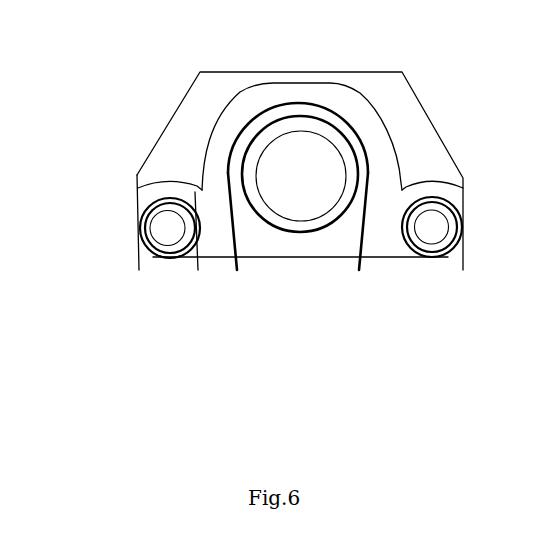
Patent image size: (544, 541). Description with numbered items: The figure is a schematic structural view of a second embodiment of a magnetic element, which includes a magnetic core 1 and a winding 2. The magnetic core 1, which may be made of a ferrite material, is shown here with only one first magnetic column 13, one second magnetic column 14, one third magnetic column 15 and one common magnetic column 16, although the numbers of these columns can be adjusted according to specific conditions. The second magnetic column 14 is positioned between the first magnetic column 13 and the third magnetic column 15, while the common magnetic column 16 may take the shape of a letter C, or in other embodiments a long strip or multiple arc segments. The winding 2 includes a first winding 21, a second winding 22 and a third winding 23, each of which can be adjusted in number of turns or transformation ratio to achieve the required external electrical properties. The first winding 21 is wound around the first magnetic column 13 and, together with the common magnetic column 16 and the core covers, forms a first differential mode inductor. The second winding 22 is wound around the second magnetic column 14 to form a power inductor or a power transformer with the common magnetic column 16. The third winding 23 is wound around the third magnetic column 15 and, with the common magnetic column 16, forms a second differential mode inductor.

The magnetic core 1 is at (122, 102).
The winding 2 is at (300, 235).
The first magnetic column 13 is at (168, 223).
The second magnetic column 14 is at (305, 141).
The third magnetic column 15 is at (428, 238).
The common magnetic column 16 is at (420, 124).
The first winding 21 is at (197, 268).
The second winding 22 is at (358, 270).
The third winding 23 is at (213, 322).